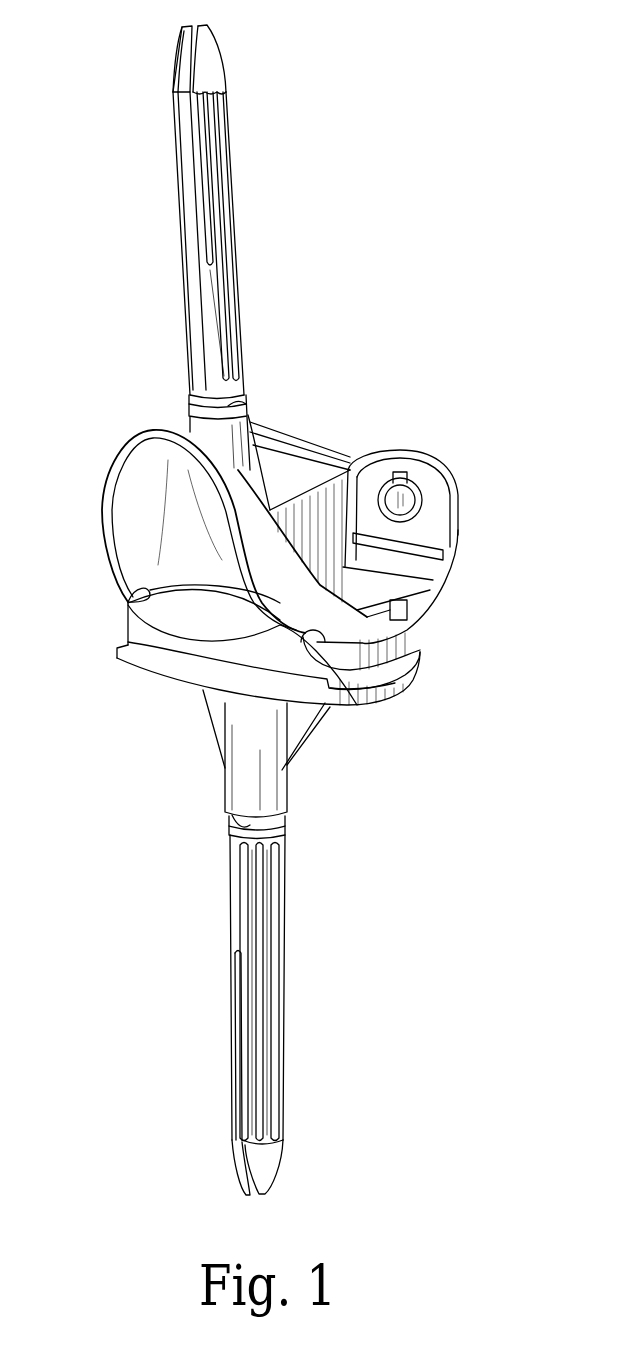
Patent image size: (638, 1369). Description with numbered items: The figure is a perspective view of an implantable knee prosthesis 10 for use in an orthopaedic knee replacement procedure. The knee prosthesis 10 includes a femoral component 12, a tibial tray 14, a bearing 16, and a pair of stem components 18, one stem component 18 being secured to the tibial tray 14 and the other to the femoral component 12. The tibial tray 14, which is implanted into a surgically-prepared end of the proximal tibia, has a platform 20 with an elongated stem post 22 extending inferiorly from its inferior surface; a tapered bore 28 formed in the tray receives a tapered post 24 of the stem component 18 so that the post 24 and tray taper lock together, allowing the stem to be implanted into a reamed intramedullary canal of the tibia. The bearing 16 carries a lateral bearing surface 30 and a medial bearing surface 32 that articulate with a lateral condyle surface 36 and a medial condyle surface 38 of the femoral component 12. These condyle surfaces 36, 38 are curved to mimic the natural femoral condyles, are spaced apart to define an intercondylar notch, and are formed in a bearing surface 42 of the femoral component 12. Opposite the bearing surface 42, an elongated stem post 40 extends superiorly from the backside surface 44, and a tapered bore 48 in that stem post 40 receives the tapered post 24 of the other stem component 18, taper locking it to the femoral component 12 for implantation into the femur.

The knee prosthesis 10 is at (430, 156).
The femoral component 12 is at (301, 470).
The tibial tray 14 is at (396, 690).
The bearing 16 is at (411, 667).
The stem component 18 is at (222, 172).
The platform 20 is at (146, 667).
The elongated stem post 22 is at (271, 795).
The tapered post 24 is at (203, 405).
The tapered bore 28 is at (243, 823).
The lateral bearing surface 30 is at (127, 598).
The medial bearing surface 32 is at (357, 705).
The lateral condyle surface 36 is at (123, 601).
The medial condyle surface 38 is at (412, 634).
The elongated stem post 40 is at (267, 444).
The bearing surface 42 is at (127, 550).
The backside surface 44 is at (346, 458).
The tapered bore 48 is at (243, 410).